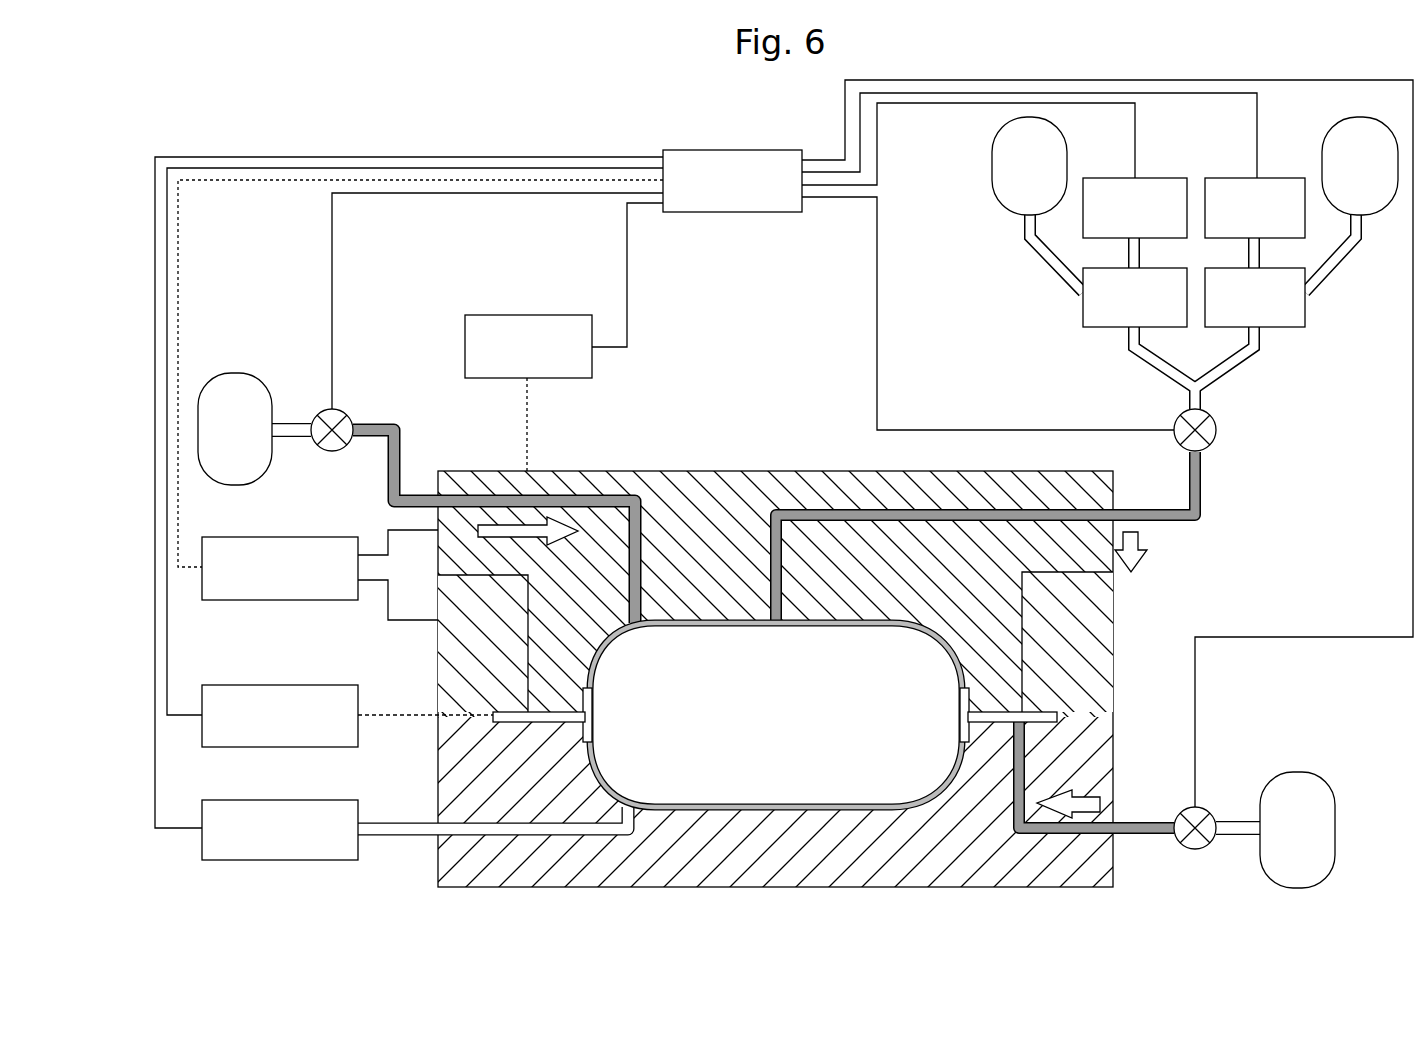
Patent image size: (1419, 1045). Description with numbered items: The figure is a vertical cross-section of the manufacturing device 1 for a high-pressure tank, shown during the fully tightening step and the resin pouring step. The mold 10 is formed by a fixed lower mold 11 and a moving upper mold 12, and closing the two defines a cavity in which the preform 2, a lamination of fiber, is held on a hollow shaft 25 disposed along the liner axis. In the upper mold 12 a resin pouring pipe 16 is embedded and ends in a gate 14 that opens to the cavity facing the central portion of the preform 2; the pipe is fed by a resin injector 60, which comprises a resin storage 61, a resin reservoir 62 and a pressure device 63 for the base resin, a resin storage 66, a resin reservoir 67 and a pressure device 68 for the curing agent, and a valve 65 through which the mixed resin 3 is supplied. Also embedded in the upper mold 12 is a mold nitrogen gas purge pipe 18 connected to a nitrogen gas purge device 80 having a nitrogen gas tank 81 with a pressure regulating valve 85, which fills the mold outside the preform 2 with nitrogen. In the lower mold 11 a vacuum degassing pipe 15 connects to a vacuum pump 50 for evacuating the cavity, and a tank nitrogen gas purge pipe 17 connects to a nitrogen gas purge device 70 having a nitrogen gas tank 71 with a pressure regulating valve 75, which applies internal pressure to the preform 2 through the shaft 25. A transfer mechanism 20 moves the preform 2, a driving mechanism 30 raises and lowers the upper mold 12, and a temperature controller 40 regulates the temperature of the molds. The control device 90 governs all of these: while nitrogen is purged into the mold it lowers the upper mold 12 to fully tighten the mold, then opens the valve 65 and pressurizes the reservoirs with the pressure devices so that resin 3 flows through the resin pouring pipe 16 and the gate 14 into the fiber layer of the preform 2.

The manufacturing device 1 is at (303, 138).
The preform 2 is at (912, 770).
The resin 3 is at (1204, 500).
The mold 10 is at (852, 679).
The lower mold 11 is at (1100, 628).
The upper mold 12 is at (1105, 497).
The gate 14 is at (775, 626).
The vacuum degassing pipe 15 is at (557, 830).
The resin pouring pipe 16 is at (838, 515).
The tank nitrogen gas purge pipe 17 is at (1060, 835).
The mold nitrogen gas purge pipe 18 is at (486, 500).
The transfer mechanism 20 is at (255, 685).
The shaft 25 is at (1040, 722).
The driving mechanism 30 is at (503, 315).
The temperature controller 40 is at (255, 537).
The vacuum pump 50 is at (255, 800).
The resin injector 60 is at (1196, 284).
The resin storage 61 is at (1009, 215).
The resin reservoir 62 is at (1107, 330).
The pressure device 63 is at (1166, 178).
The valve 65 is at (1290, 408).
The resin storage 66 is at (1379, 215).
The resin reservoir 67 is at (1295, 330).
The pressure device 68 is at (1286, 178).
The nitrogen gas purge device 70 is at (1254, 778).
The nitrogen gas tank 71 is at (1299, 772).
The pressure regulating valve 75 is at (1243, 746).
The nitrogen gas purge device 80 is at (289, 382).
The nitrogen gas tank 81 is at (238, 373).
The pressure regulating valve 85 is at (300, 357).
The control device 90 is at (692, 150).